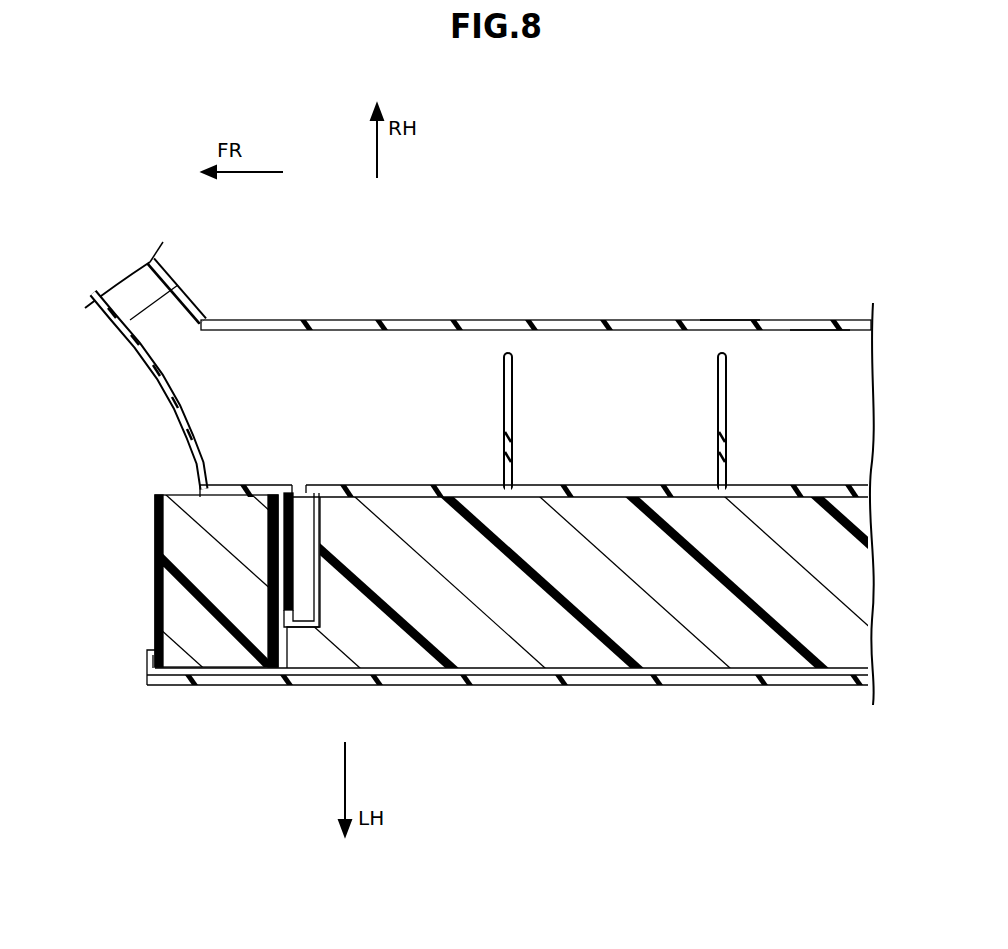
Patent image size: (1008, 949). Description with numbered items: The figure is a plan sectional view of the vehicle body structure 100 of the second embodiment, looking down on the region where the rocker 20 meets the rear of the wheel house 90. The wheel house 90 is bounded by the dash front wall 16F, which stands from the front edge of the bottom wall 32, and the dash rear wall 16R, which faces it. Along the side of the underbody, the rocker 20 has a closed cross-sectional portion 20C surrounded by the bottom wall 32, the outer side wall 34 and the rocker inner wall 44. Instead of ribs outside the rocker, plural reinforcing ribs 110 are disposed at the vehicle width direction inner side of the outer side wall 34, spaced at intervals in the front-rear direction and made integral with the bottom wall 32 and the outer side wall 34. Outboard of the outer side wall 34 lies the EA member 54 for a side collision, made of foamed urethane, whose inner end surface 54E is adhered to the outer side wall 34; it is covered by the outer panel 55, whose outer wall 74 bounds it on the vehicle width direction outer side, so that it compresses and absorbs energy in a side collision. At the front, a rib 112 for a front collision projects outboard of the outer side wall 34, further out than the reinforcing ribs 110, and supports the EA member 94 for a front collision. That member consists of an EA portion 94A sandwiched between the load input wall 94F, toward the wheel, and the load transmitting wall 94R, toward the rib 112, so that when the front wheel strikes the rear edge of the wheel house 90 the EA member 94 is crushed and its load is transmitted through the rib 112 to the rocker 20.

The dash front wall 16F is at (173, 285).
The dash rear wall 16R is at (193, 302).
The rocker 20 is at (608, 316).
The rocker inner wall 44 is at (721, 320).
The bottom wall 32 is at (812, 352).
The closed cross-sectional portion 20C is at (637, 386).
The wheel house 90 is at (142, 439).
The reinforcing rib 110 is at (503, 460).
The outer side wall 34 is at (775, 486).
The inner end surface 54E is at (830, 492).
The EA member for a side collision 54 is at (550, 653).
The rib for a front collision 112 is at (300, 627).
The EA member for a front collision 94 is at (230, 650).
The load input wall 94F is at (160, 687).
The EA portion 94A is at (223, 652).
The load transmitting wall 94R is at (273, 652).
The outer wall 74 is at (664, 685).
The outer panel 55 is at (770, 685).
The vehicle body structure 100 is at (497, 750).